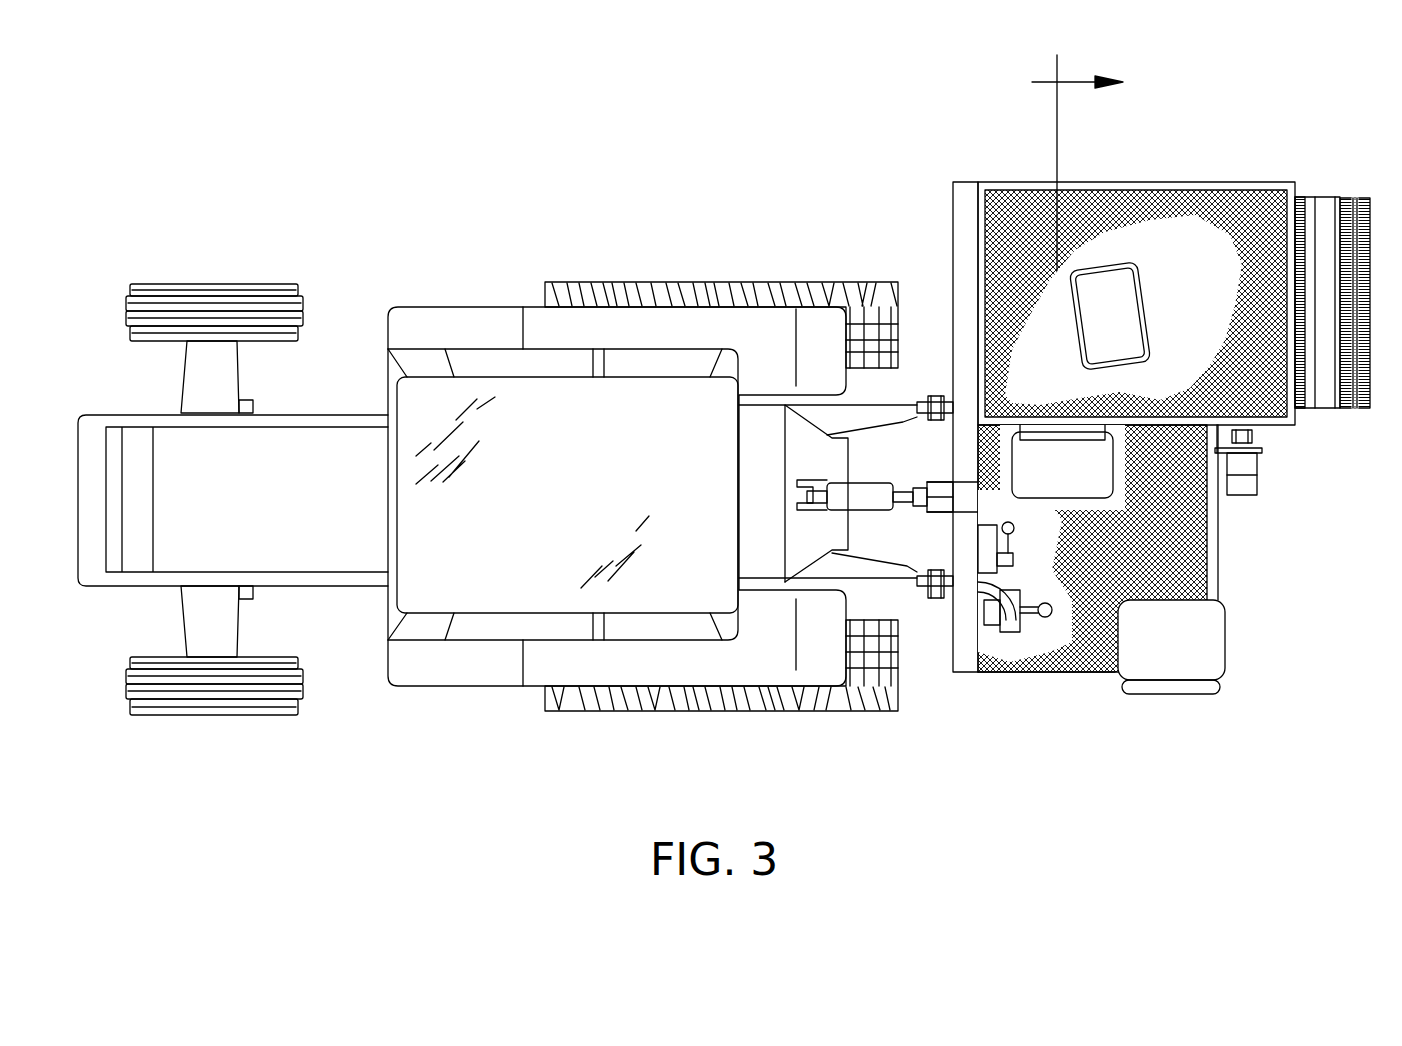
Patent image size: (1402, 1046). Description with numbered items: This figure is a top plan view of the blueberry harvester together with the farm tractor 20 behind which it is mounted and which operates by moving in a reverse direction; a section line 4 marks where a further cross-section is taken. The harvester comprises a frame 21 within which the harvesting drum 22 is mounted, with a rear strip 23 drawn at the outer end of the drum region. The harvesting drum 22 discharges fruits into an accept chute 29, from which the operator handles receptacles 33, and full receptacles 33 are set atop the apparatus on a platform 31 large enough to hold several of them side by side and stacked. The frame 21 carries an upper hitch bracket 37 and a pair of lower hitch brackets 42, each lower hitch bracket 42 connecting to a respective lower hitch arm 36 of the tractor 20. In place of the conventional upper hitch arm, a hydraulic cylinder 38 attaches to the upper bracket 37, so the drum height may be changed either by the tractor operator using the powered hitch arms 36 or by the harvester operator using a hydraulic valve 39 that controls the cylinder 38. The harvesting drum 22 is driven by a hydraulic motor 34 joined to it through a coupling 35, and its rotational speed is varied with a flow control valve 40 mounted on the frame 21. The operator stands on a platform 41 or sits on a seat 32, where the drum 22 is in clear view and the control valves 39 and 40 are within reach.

The section line 4- 4 is at (1084, 163).
The farm tractor 20 is at (488, 313).
The frame 21 is at (958, 203).
The harvesting drum 22 is at (1325, 197).
The rear bumper strip 23 is at (1360, 202).
The accept chute 29 is at (1083, 433).
The platform 31 is at (1232, 222).
The seat 32 is at (1208, 640).
The receptacle 33 is at (1130, 287).
The hydraulic motor 34 is at (1258, 478).
The coupling 35 is at (1258, 437).
The lower hitch arm 36 is at (892, 577).
The upper hitch bracket 37 is at (952, 470).
The hydraulic cylinder 38 is at (869, 492).
The hydraulic valve 39 is at (1027, 615).
The flow control valve 40 is at (997, 557).
The platform 41 is at (1083, 648).
The lower hitch bracket 42 is at (933, 590).